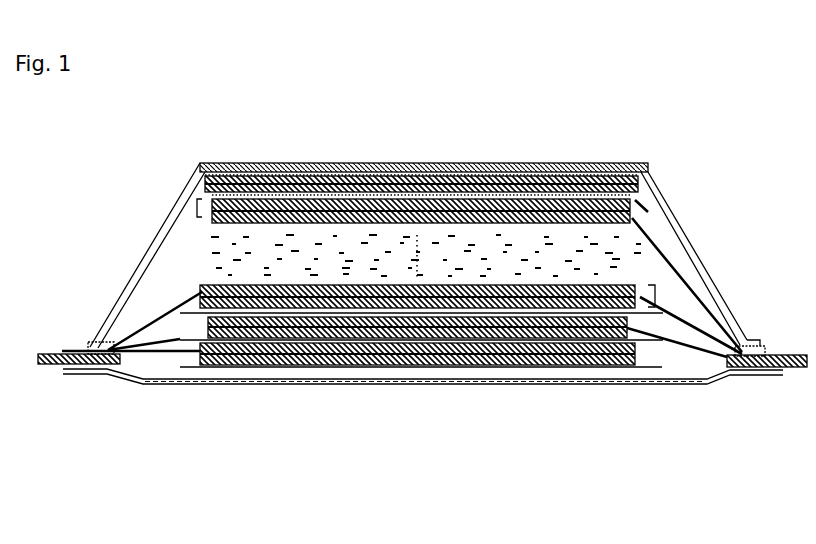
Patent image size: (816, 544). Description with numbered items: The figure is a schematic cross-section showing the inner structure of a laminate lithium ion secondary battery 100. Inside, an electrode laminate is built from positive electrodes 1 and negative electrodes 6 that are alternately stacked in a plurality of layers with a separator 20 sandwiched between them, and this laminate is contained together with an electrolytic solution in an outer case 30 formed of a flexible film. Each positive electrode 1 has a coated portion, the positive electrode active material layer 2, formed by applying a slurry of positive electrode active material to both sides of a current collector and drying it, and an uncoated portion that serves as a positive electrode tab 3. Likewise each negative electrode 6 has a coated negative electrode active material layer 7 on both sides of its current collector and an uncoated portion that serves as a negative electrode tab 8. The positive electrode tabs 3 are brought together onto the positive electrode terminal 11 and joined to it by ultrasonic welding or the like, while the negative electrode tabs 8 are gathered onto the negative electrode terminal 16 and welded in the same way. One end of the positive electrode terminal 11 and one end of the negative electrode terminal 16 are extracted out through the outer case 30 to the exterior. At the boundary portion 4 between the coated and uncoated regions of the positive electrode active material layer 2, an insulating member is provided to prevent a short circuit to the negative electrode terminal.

The lithium ion secondary battery 100 is at (513, 113).
The positive electrode 1 is at (197, 207).
The positive electrode active material layer 2 is at (507, 206).
The positive electrode tab 3 is at (715, 348).
The boundary portion 4 is at (666, 320).
The negative electrode 6 is at (657, 285).
The negative electrode active material layer 7 is at (288, 182).
The negative electrode tab 8 is at (140, 318).
The positive electrode terminal 11 is at (797, 377).
The negative electrode terminal 16 is at (44, 366).
The separator 20 is at (190, 367).
The outer case 30 is at (323, 385).